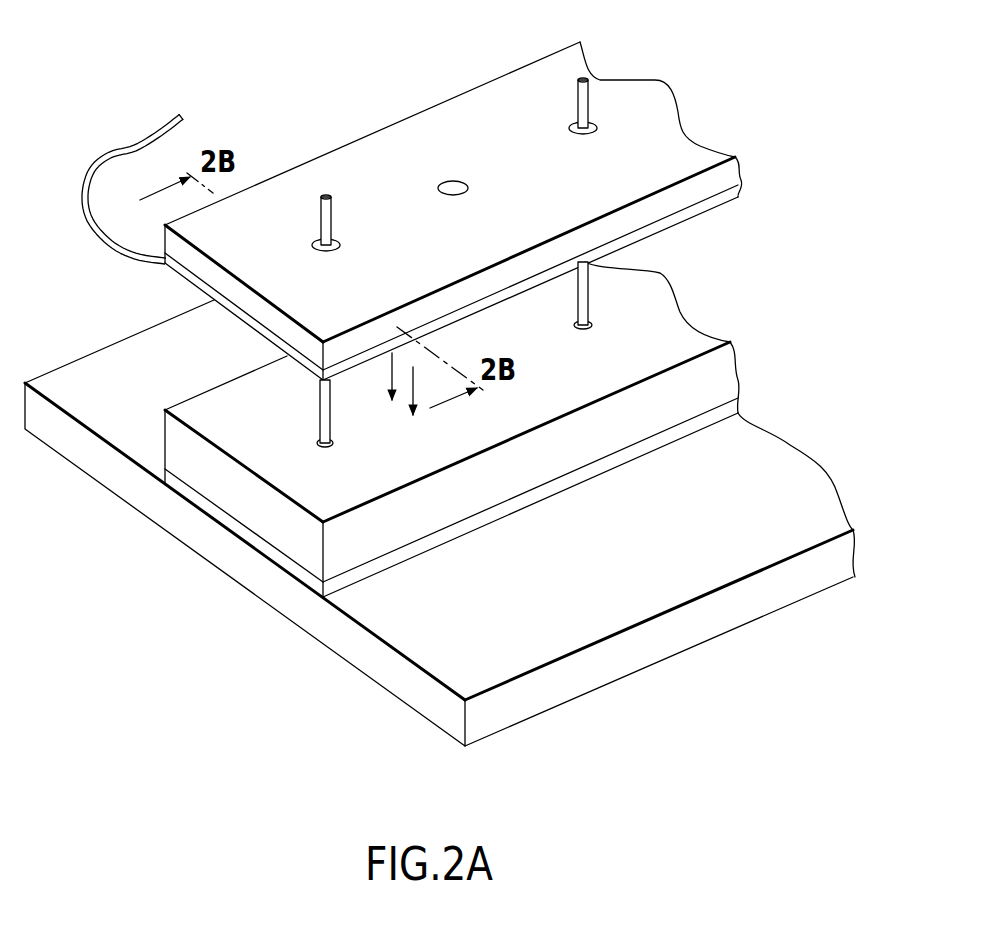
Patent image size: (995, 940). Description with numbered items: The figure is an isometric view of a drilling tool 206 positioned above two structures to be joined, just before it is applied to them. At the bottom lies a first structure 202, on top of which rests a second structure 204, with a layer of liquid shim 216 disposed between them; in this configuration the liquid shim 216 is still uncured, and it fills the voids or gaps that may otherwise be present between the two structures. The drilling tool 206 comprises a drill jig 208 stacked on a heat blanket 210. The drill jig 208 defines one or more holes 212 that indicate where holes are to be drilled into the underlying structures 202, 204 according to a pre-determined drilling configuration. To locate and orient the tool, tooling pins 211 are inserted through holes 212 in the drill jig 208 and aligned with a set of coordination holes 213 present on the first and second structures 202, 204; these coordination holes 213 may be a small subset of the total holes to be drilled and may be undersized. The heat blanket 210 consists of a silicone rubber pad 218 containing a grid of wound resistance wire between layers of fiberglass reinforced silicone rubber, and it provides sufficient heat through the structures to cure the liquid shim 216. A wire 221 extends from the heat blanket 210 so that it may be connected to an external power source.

The first structure 202 is at (263, 582).
The second structure 204 is at (470, 429).
The drilling tool 206 is at (482, 211).
The drill jig 208 is at (741, 163).
The heat blanket 210 is at (733, 198).
The tooling pins 211 is at (323, 197).
The holes 212 is at (337, 242).
The coordination holes 213 is at (333, 442).
The liquid shim 216 is at (192, 497).
The silicone rubber pad 218 is at (183, 280).
The wires 221 is at (132, 152).